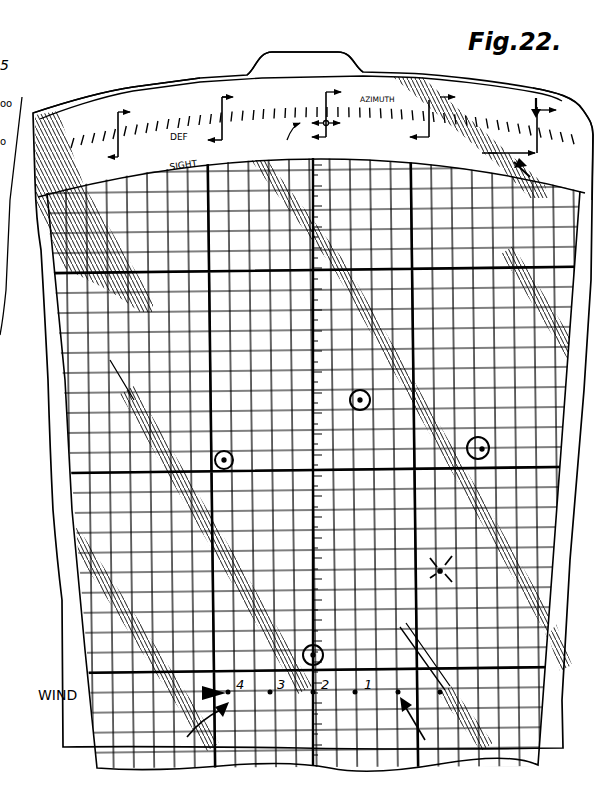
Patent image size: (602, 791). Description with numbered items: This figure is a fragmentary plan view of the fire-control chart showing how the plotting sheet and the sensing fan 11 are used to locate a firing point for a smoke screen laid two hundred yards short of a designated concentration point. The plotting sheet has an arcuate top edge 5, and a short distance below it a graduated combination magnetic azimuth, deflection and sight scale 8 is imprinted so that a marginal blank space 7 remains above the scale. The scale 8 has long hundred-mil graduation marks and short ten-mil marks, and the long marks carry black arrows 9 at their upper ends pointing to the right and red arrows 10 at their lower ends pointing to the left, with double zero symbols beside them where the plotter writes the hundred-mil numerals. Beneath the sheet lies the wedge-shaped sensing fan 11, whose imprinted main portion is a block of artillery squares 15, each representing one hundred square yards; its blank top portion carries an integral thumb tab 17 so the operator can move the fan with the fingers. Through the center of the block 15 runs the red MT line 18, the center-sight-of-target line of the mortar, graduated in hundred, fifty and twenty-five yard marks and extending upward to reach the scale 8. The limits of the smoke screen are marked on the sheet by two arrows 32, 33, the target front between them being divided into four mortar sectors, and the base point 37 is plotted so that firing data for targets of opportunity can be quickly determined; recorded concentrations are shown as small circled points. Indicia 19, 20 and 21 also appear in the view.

The top edge 5 is at (578, 101).
The marginal blank space 7 is at (77, 101).
The arcuate scale 8 is at (163, 110).
The black arrows 9 is at (143, 100).
The red arrows 10 is at (400, 143).
The sensing fan 11 is at (57, 332).
The block of artillery squares 15 is at (86, 359).
The thumb tab 17 is at (313, 51).
The MT line 18 is at (207, 85).
The azimuth index 19 is at (327, 115).
The right deflection index 20 is at (439, 125).
The right range index 21 is at (540, 138).
The arrow 32 is at (221, 716).
The arrow 33 is at (420, 708).
The base point 37 is at (443, 573).